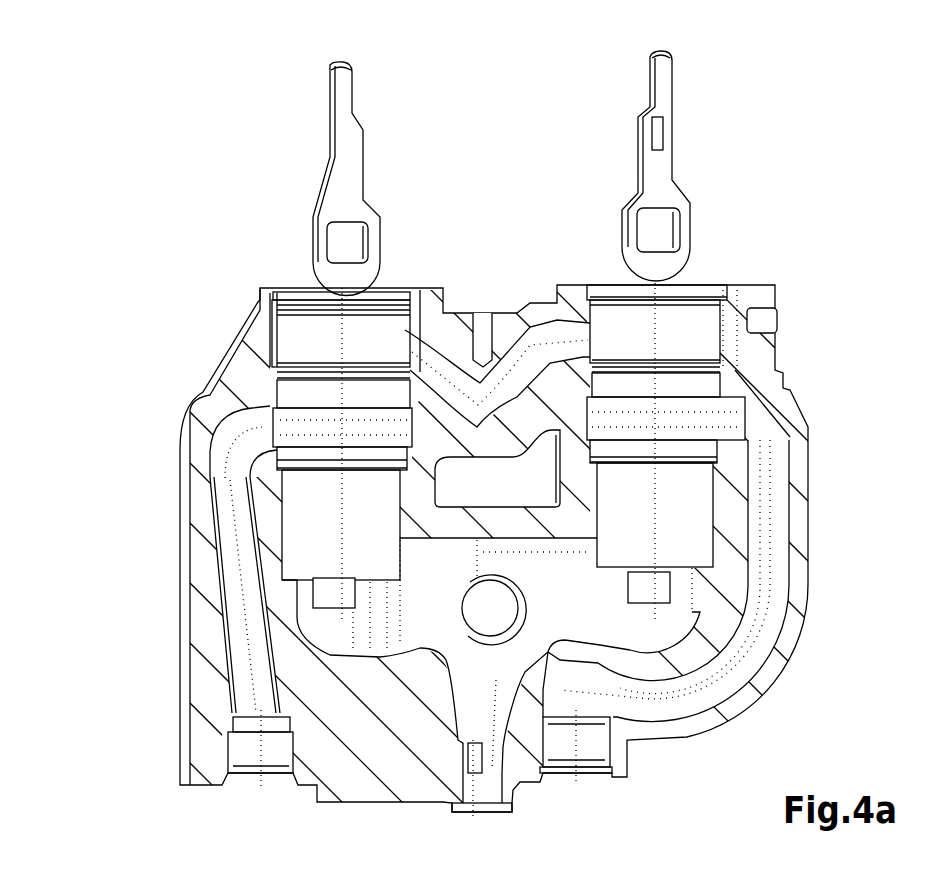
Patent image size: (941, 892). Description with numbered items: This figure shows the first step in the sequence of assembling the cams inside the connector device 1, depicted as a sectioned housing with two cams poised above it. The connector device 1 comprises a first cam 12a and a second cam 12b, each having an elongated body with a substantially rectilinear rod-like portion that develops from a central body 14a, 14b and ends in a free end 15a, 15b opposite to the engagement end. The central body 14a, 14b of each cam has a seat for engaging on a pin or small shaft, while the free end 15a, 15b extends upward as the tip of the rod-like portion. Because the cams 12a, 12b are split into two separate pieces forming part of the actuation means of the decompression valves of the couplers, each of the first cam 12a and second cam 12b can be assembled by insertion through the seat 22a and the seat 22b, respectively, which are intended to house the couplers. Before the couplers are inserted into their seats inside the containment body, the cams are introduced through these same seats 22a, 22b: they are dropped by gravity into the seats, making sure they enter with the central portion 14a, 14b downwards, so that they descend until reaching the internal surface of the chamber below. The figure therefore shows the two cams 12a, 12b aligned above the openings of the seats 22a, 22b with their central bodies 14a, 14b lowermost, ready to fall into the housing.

The connector device 1 is at (207, 307).
The first cam 12a is at (326, 170).
The second cam 12b is at (677, 160).
The central body 14a is at (380, 233).
The central body 14b is at (693, 232).
The free end 15a is at (333, 64).
The free end 15b is at (667, 57).
The seat 22a is at (290, 368).
The seat 22b is at (700, 360).